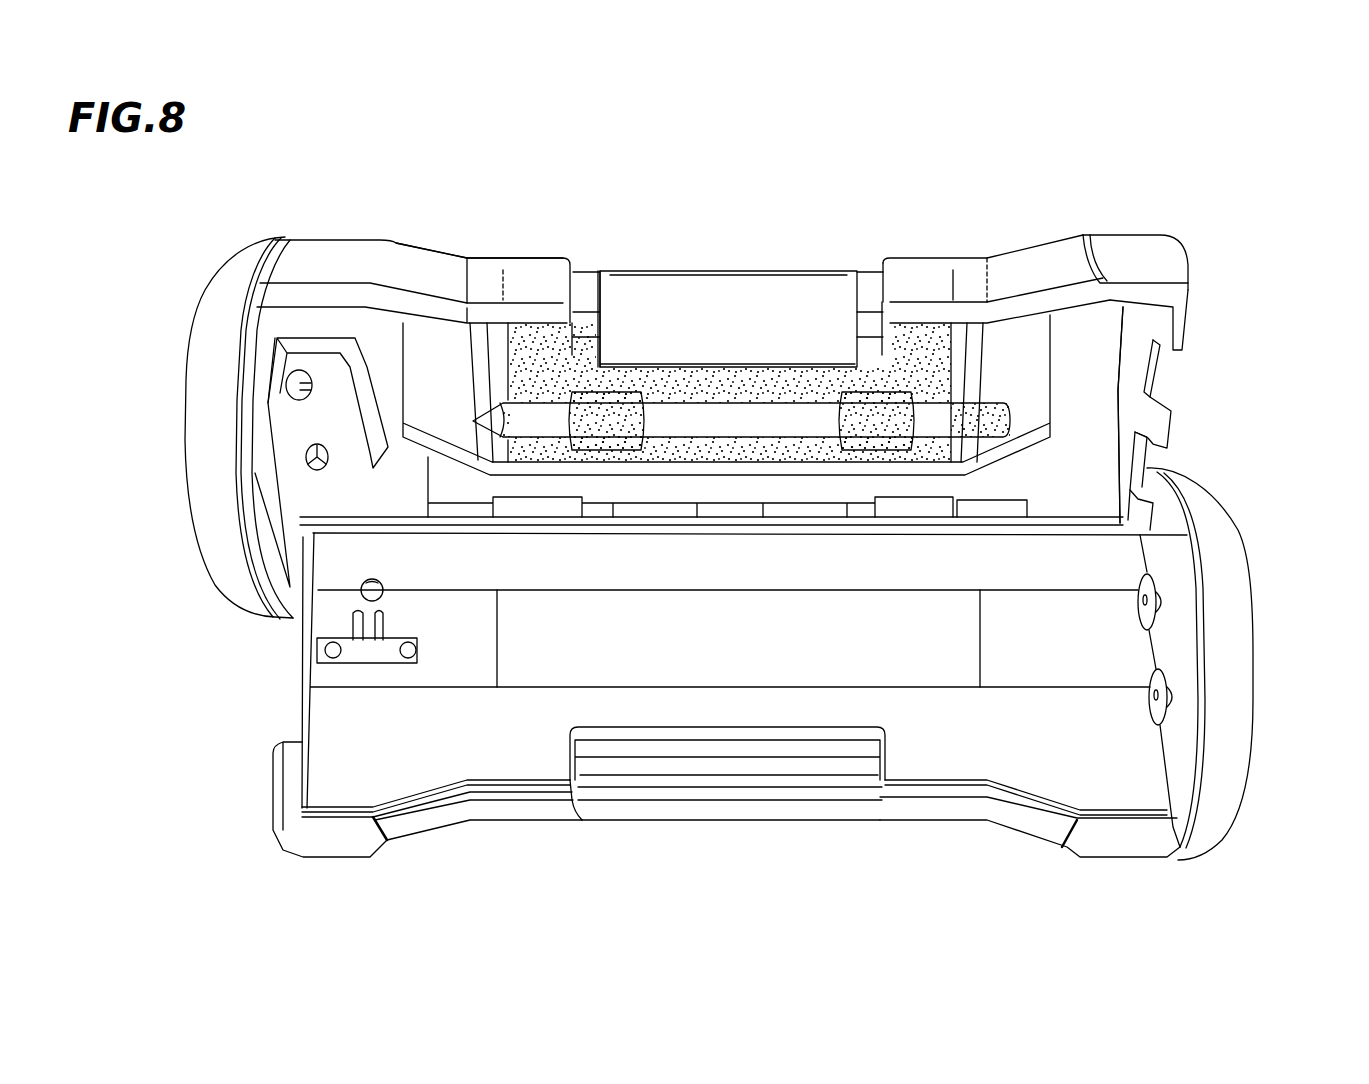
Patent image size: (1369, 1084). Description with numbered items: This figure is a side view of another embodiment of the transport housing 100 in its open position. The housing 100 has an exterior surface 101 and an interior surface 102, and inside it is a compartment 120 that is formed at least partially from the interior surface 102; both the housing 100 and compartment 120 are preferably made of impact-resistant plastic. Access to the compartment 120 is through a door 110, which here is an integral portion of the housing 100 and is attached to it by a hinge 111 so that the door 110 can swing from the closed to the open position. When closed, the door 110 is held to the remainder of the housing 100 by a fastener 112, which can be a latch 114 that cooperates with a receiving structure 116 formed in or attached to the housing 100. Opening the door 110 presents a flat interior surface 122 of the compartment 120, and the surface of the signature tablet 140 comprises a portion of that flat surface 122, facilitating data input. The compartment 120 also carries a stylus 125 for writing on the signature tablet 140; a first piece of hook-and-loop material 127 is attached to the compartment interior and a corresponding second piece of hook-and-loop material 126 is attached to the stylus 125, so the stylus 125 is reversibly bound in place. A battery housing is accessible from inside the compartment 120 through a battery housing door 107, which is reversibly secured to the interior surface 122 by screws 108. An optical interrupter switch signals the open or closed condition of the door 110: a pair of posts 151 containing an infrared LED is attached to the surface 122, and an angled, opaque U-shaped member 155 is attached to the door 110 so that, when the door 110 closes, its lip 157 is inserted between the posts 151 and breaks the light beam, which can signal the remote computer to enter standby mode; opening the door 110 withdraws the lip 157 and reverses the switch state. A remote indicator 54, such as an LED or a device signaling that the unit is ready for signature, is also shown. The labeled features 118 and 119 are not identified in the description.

The housing 100 is at (1272, 222).
The exterior surface 101 is at (1153, 250).
The interior surface 102 is at (1135, 330).
The battery housing door 107 is at (1182, 648).
The screws 108 is at (1140, 617).
The door 110 is at (417, 285).
The hinge 111 is at (800, 510).
The fastener 112 is at (733, 292).
The latch 114 is at (780, 298).
The receiving structure 116 is at (720, 750).
The left end cap 118 is at (183, 428).
The right end cap 119 is at (1253, 590).
The compartment 120 is at (1092, 440).
The flat interior surface 122 is at (953, 748).
The stylus 125 is at (973, 420).
The second piece of hook-and-loop material 126 is at (596, 408).
The first piece of hook-and-loop material 127 is at (531, 362).
The signature tablet 140 is at (547, 657).
The posts 151 is at (376, 662).
The U-shaped member 155 is at (326, 372).
The lip 157 is at (358, 413).
The remote indicator 54 is at (375, 594).